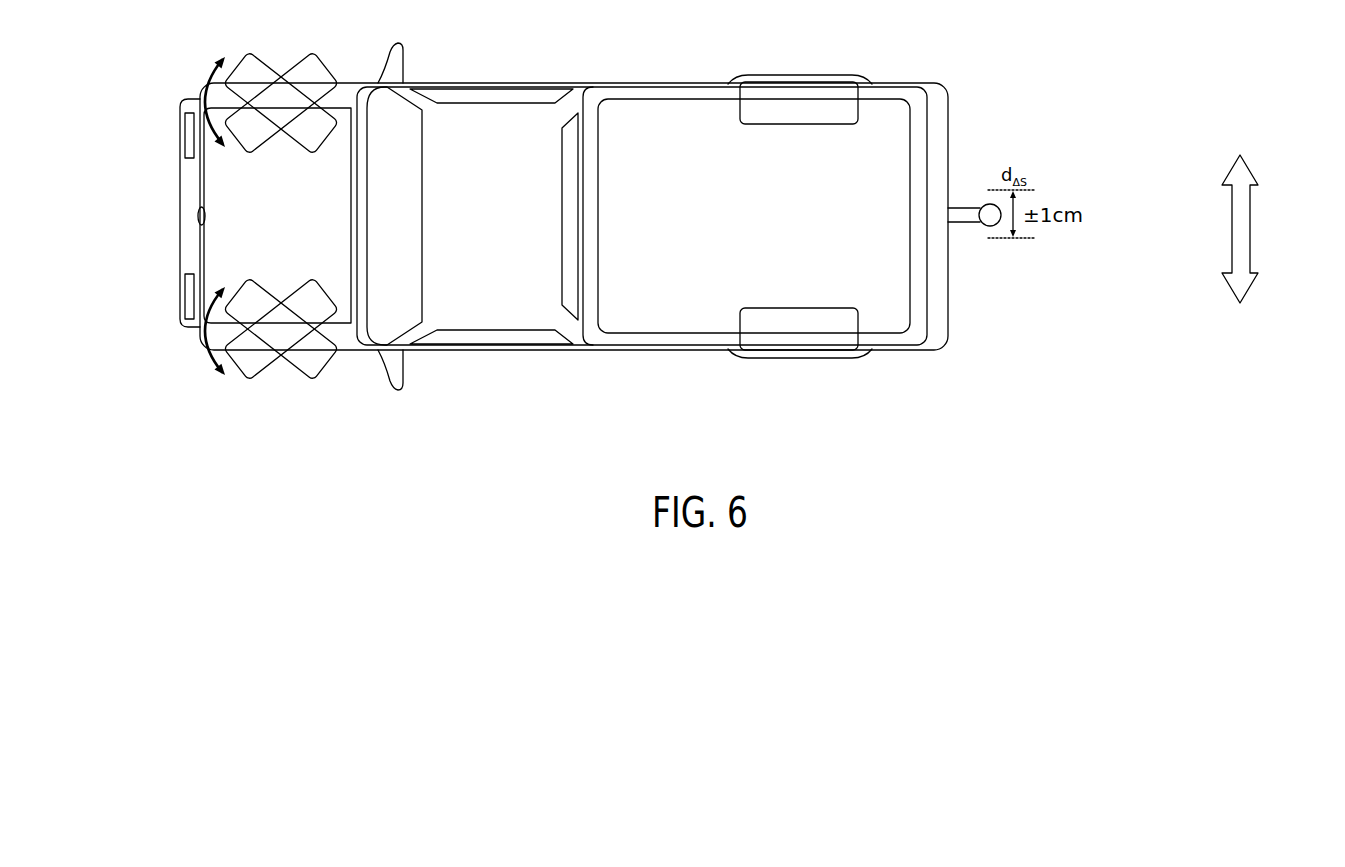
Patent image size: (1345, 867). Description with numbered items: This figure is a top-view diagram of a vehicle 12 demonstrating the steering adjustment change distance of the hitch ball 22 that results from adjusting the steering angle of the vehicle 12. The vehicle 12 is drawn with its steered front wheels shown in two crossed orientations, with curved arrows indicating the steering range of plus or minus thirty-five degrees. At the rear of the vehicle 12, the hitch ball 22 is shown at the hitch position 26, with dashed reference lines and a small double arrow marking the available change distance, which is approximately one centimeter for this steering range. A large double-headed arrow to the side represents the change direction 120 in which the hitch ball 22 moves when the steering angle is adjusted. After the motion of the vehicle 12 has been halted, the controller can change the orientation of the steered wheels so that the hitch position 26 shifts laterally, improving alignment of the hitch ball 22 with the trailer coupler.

The vehicle 12 is at (210, 190).
The hitch ball 22 is at (1012, 259).
The hitch position 26 is at (985, 224).
The change direction 120 is at (1242, 235).